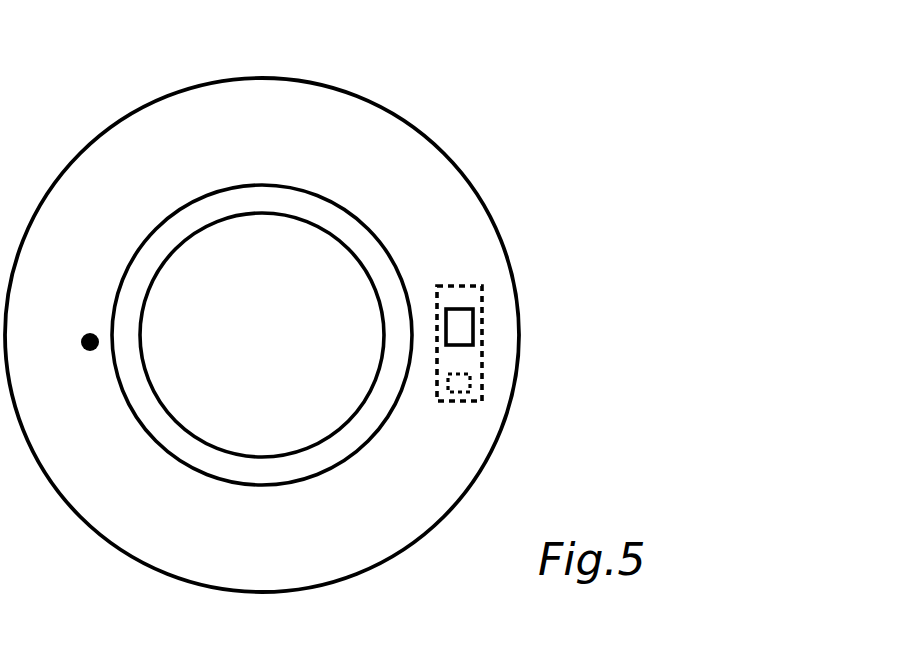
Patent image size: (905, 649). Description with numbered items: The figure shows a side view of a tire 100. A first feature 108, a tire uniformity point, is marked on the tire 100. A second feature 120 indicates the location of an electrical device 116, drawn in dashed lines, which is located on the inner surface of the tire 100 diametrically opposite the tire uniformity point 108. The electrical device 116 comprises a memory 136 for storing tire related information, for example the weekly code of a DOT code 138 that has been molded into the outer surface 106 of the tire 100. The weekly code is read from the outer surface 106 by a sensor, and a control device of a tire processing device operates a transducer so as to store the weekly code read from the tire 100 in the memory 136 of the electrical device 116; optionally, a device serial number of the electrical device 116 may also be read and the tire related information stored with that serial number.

The tire 100 is at (510, 265).
The outer surface 106 is at (448, 193).
The first feature 108 is at (88, 333).
The electrical device 116 is at (482, 358).
The second feature 120 is at (462, 328).
The memory 136 is at (463, 382).
The DOT code 138 is at (267, 128).